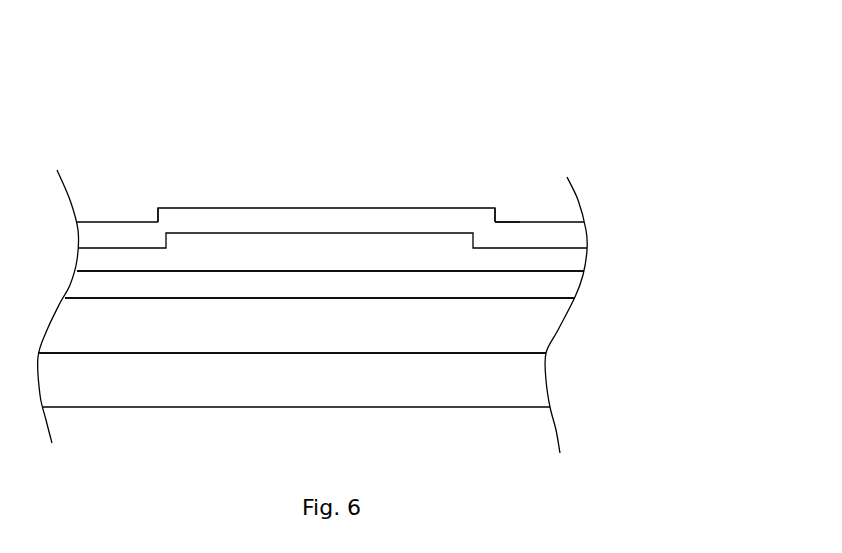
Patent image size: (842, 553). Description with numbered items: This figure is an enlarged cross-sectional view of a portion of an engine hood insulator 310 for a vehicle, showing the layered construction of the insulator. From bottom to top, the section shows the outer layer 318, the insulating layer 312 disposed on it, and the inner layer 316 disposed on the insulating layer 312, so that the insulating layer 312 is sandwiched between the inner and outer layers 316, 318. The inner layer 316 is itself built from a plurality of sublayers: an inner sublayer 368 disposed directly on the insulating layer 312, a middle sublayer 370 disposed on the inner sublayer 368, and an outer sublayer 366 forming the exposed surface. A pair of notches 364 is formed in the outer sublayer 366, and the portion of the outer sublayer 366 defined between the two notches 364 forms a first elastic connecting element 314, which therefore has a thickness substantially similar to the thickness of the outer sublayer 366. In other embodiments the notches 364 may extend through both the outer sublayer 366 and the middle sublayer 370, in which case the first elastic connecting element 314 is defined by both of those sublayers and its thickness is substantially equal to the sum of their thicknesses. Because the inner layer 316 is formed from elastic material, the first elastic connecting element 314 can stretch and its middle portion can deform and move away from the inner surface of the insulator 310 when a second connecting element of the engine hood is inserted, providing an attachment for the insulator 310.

The engine hood insulator 310 is at (567, 67).
The insulating layer 312 is at (427, 328).
The first elastic connecting element 314 is at (333, 231).
The inner layer 316 is at (515, 215).
The outer layer 318 is at (427, 390).
The notch 364 is at (159, 208).
The outer sublayer 366 is at (140, 243).
The inner sublayer 368 is at (427, 292).
The middle sublayer 370 is at (427, 268).